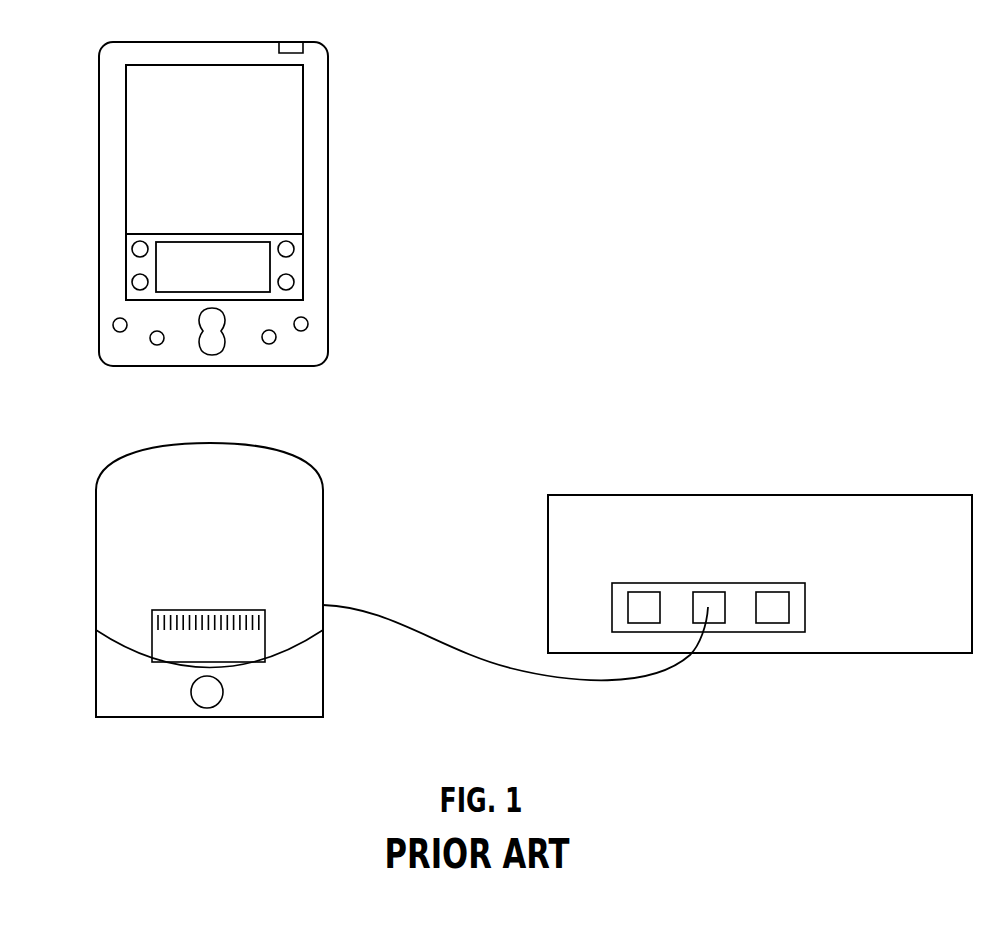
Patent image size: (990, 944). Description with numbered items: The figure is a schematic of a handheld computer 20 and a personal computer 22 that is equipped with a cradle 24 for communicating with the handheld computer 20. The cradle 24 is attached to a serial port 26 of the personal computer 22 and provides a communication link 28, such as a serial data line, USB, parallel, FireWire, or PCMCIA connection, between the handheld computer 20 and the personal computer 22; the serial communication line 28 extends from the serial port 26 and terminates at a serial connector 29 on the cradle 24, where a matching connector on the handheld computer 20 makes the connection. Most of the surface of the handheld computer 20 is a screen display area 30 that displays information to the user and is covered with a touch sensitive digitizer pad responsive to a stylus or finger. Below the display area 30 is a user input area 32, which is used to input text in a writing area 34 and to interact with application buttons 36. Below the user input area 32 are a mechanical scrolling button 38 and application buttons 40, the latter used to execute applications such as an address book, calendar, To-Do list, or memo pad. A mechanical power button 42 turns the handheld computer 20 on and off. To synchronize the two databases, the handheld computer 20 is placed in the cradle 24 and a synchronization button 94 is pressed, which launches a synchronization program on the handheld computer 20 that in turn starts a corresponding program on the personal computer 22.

The handheld computer 20 is at (328, 120).
The personal computer 22 is at (760, 494).
The cradle 24 is at (325, 556).
The serial port 26 is at (727, 607).
The communication link 28 is at (457, 652).
The serial connector 29 is at (170, 610).
The screen display area 30 is at (137, 88).
The user input area 32 is at (253, 235).
The writing area 34 is at (167, 257).
The application buttons 36 is at (140, 249).
The mechanical scrolling button 38 is at (211, 350).
The application buttons 40 is at (157, 338).
The mechanical power button 42 is at (292, 49).
The synchronization button 94 is at (208, 692).